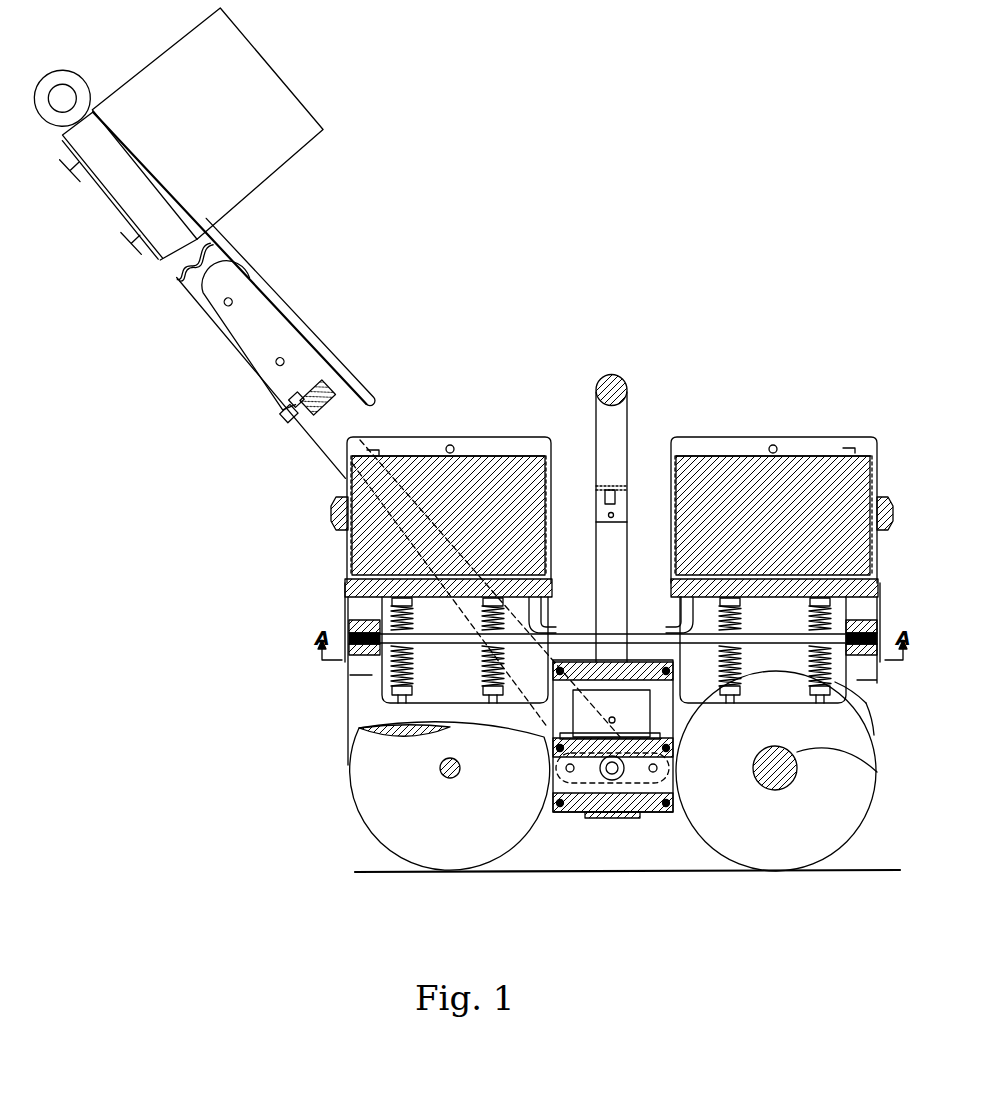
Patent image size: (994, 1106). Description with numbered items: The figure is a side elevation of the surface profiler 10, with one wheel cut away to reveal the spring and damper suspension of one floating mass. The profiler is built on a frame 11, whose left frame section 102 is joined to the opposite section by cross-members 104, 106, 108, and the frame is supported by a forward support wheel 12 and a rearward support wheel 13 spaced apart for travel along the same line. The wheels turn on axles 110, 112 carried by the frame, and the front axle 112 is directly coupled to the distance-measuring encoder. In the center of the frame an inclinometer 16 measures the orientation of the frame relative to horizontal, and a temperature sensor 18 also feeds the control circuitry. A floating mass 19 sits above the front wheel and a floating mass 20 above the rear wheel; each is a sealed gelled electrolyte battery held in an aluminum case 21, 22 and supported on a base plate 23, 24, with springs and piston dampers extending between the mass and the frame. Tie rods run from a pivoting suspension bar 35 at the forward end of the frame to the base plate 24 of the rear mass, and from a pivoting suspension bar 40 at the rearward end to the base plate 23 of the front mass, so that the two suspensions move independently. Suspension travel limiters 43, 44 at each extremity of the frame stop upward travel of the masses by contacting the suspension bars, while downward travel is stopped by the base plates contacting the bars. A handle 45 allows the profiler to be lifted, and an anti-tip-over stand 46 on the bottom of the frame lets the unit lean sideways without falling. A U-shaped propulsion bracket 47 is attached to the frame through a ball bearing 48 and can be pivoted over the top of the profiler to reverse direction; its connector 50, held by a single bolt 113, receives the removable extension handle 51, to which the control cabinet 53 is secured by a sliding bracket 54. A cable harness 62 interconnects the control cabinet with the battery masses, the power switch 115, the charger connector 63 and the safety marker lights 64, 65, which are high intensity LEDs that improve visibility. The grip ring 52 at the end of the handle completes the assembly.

The surface profiler 10 is at (760, 350).
The frame 11 is at (871, 724).
The forward support wheel 12 is at (810, 832).
The rearward support wheel 13 is at (483, 828).
The inclinometer 16 is at (632, 666).
The temperature sensor 18 is at (622, 705).
The floating mass 19 is at (853, 562).
The floating mass 20 is at (370, 565).
The aluminum case 21 is at (865, 450).
The aluminum case 22 is at (517, 450).
The base plate 23 is at (885, 590).
The base plate 24 is at (345, 585).
The pivoting suspension bar 35 is at (878, 670).
The pivoting suspension bar 40 is at (347, 662).
The suspension travel limiter 43 is at (878, 624).
The suspension travel limiter 44 is at (347, 617).
The handle 45 is at (624, 384).
The anti-tip-over stand 46 is at (612, 813).
The U-shaped propulsion bracket 47 is at (292, 407).
The ball bearing 48 is at (643, 782).
The connector 50 is at (223, 291).
The extension handle 51 is at (195, 262).
The handle grip ring 52 is at (62, 98).
The control cabinet 53 is at (206, 122).
The sliding bracket 54 is at (125, 191).
The cable harness 62 is at (256, 332).
The charger connector 63 is at (614, 478).
The safety marker light 64 is at (896, 515).
The safety marker light 65 is at (332, 520).
The left frame section 102 is at (866, 703).
The cross-member 104 is at (566, 666).
The cross-member 106 is at (650, 737).
The cross-member 108 is at (572, 818).
The axle 110 is at (437, 765).
The front axle 112 is at (878, 772).
The bolt 113 is at (318, 397).
The power switch 115 is at (600, 478).